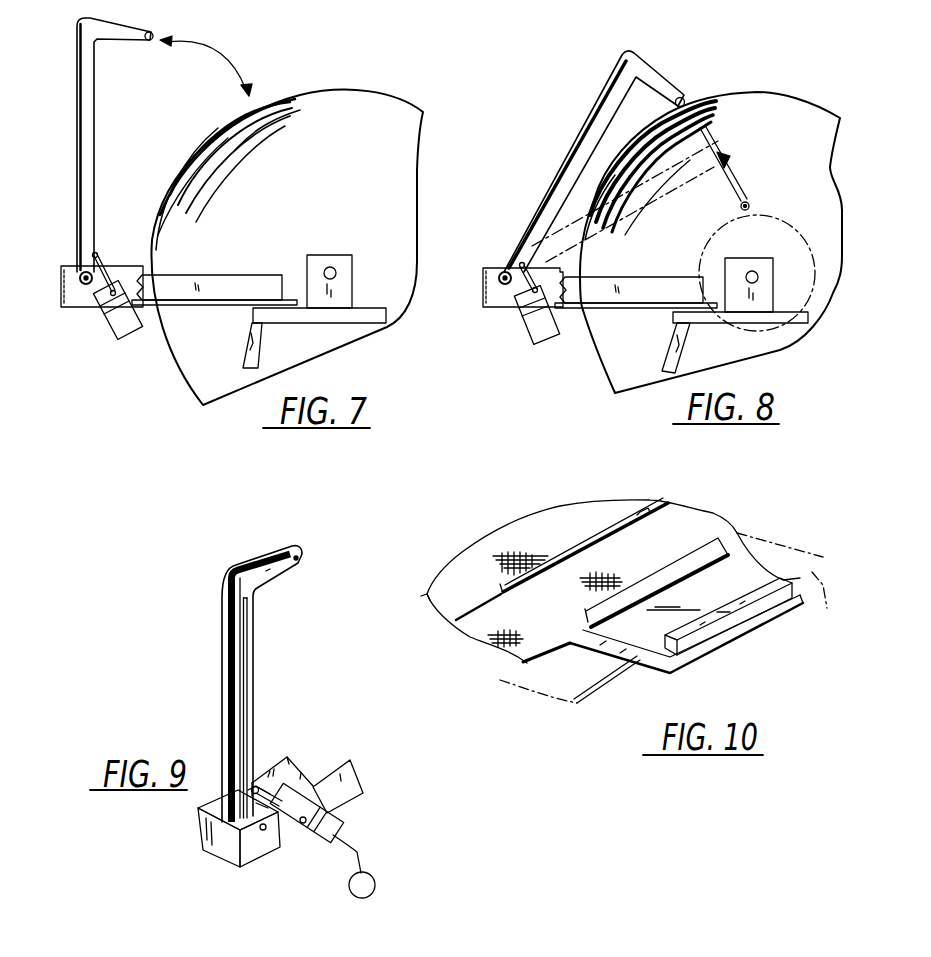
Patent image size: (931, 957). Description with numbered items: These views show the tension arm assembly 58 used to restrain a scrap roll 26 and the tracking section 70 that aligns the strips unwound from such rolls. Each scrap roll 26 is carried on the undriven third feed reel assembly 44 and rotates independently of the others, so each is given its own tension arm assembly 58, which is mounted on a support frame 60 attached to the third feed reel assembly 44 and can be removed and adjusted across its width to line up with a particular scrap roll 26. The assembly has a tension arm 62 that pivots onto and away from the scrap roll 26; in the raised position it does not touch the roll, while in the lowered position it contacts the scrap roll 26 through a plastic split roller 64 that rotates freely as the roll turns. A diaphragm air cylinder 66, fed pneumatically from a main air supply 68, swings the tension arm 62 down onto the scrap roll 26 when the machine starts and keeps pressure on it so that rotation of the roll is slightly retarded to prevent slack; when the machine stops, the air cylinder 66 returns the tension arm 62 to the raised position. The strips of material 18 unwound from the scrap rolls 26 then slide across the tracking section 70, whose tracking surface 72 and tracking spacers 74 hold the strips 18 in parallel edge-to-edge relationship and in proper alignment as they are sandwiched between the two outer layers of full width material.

In FIG. 10, the strips of material 18 is at (592, 573).
In FIG. 7, the scrap roll 26 is at (358, 178).
In FIG. 8, the scrap roll 26 is at (796, 184).
In FIG. 7, the third feed reel assembly 44 is at (310, 323).
In FIG. 8, the third feed reel assembly 44 is at (714, 323).
In FIG. 7, the tension arm assembly 58 is at (78, 308).
In FIG. 8, the tension arm assembly 58 is at (510, 319).
In FIG. 9, the tension arm assembly 58 is at (300, 741).
In FIG. 7, the support frame 60 is at (216, 308).
In FIG. 8, the support frame 60 is at (636, 310).
In FIG. 9, the support frame 60 is at (353, 800).
In FIG. 7, the tension arm 62 is at (98, 100).
In FIG. 8, the tension arm 62 is at (625, 161).
In FIG. 9, the tension arm 62 is at (222, 676).
In FIG. 7, the plastic split roller 64 is at (153, 33).
In FIG. 8, the plastic split roller 64 is at (687, 98).
In FIG. 9, the plastic split roller 64 is at (299, 549).
In FIG. 7, the diaphragm air cylinder 66 is at (110, 328).
In FIG. 8, the diaphragm air cylinder 66 is at (540, 343).
In FIG. 9, the diaphragm air cylinder 66 is at (333, 832).
In FIG. 9, the main air supply 68 is at (377, 883).
In FIG. 10, the tracking section 70 is at (720, 653).
In FIG. 10, the tracking surface 72 is at (688, 608).
In FIG. 10, the tracking spacers 74 is at (602, 530).